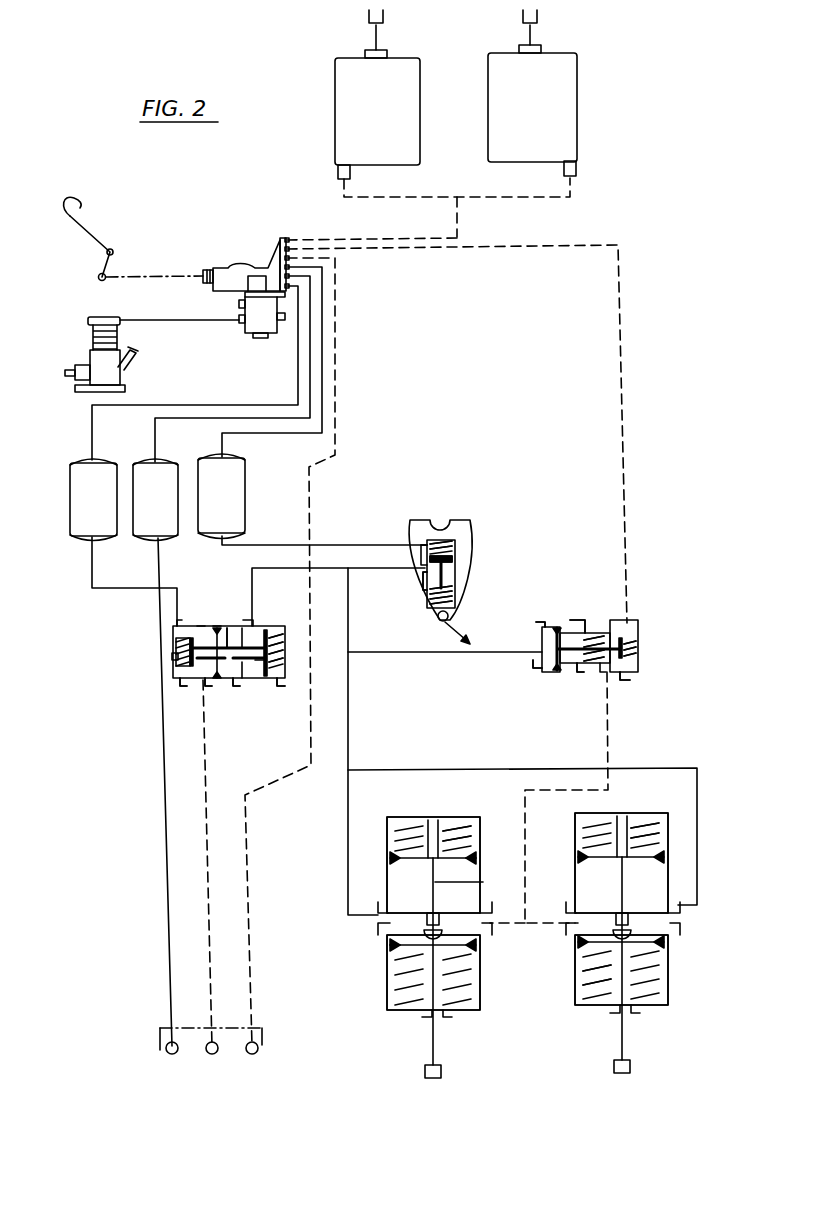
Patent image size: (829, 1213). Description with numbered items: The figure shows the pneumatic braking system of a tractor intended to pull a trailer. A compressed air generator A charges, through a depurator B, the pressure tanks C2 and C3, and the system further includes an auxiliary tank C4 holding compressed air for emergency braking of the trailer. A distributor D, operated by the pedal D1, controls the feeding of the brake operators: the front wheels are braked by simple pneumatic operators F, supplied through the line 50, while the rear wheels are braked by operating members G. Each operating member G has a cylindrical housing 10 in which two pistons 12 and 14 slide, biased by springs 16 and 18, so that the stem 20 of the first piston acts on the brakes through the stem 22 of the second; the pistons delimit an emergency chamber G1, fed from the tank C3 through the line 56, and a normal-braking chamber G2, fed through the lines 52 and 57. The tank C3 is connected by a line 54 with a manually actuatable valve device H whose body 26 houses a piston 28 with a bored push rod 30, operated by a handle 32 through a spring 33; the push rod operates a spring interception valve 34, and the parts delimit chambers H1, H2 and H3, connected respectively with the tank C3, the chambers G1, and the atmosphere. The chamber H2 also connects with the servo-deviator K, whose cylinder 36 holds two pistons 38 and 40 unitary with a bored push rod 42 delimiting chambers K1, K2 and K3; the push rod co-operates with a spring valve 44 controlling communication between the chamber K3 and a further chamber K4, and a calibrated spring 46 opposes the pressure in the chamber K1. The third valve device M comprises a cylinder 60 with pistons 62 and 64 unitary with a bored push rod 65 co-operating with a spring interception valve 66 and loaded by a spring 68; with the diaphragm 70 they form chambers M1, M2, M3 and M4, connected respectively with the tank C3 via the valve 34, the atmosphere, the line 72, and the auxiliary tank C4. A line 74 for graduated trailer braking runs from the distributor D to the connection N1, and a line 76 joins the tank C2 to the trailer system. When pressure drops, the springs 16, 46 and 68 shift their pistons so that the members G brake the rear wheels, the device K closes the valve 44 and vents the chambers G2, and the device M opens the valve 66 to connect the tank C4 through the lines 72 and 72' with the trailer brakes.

The pneumatic operator F is at (418, 86).
The line 50 is at (458, 219).
The line 52 is at (618, 366).
The pedal D1 is at (92, 238).
The distributor D is at (232, 266).
The depurator B is at (252, 322).
The compressed air generator A is at (108, 372).
The auxiliary tank C4 is at (100, 470).
The tank C2 is at (163, 470).
The tank C3 is at (238, 480).
The line 72 is at (133, 585).
The line 76 is at (167, 891).
The line from accumulator C3 to valve H 54 is at (340, 545).
The line 56 is at (350, 722).
The line 74 is at (248, 875).
The third valve device M is at (290, 666).
The spring interception valve 66 is at (183, 645).
The chamber M4 is at (182, 672).
The chamber M3 is at (200, 632).
The piston 62 is at (216, 632).
The bored push rod 65 is at (232, 632).
The spring 68 is at (283, 648).
The cylinder 60 is at (183, 680).
The chamber M2 is at (220, 680).
The diaphragm 70 is at (238, 680).
The chamber M1 is at (255, 668).
The piston 64 is at (272, 680).
The line 72' is at (194, 863).
The connection N1 is at (262, 1040).
The valve device H is at (474, 556).
The spring interception valve 34 is at (425, 545).
The chamber H1 is at (455, 550).
The body 26 is at (456, 553).
The chamber H2 is at (456, 579).
The bored push rod 30 is at (428, 578).
The piston 28 is at (452, 590).
The chamber H3 is at (430, 598).
The spring 33 is at (437, 610).
The handle 32 is at (470, 637).
The valve device K is at (646, 647).
The chamber K1 is at (548, 632).
The piston 38 is at (556, 630).
The bored push rod 42 is at (586, 632).
The chamber K3 is at (600, 635).
The spring valve 44 is at (628, 645).
The chamber K2 is at (568, 665).
The piston 40 is at (577, 668).
The spring 46 is at (595, 666).
The cylinder 36 is at (625, 672).
The chamber K4 is at (630, 660).
The line 57 is at (527, 858).
The operating member G is at (382, 1000).
The chamber G1 is at (404, 880).
The chamber G2 is at (470, 930).
The stem 20 is at (470, 896).
The stem 22 is at (433, 1045).
The spring 16 is at (455, 818).
The piston 12 is at (478, 860).
The piston 14 is at (395, 949).
The cylindrical housing 10 is at (668, 826).
The spring 18 is at (600, 956).